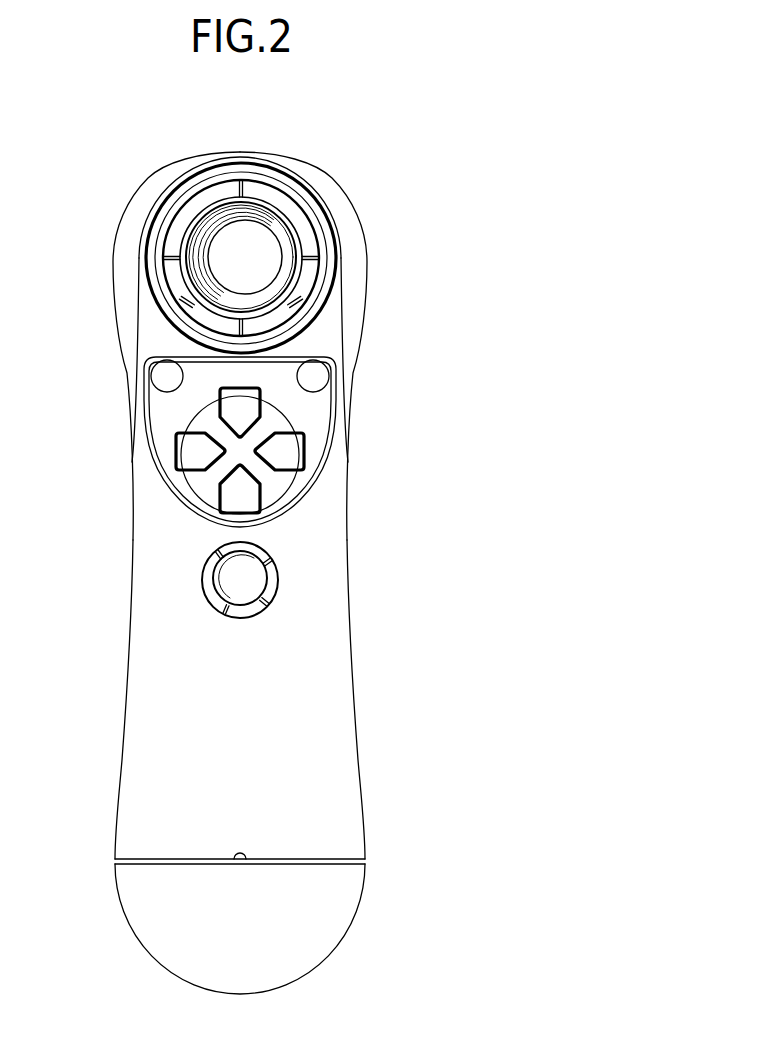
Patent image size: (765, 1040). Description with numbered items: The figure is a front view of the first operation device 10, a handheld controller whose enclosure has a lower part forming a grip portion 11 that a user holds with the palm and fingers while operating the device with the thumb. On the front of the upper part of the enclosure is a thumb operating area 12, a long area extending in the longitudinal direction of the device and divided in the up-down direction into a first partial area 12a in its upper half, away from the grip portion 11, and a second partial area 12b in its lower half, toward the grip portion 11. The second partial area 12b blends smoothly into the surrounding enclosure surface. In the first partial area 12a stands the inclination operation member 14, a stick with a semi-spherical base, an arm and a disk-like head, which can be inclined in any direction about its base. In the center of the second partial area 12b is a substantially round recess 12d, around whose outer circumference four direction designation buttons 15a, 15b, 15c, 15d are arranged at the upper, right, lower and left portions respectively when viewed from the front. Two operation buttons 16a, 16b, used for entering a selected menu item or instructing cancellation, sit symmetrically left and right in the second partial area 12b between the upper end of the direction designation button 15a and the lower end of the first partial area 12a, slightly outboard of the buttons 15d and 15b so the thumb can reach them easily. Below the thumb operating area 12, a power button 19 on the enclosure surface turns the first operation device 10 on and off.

The first operation device 10 is at (254, 549).
The grip portion 11 is at (238, 697).
The thumb operating area 12 is at (346, 338).
The first partial area 12a is at (315, 272).
The second partial area 12b is at (247, 442).
The recess 12d is at (192, 492).
The inclination operation member 14 is at (286, 206).
The direction designation button 15a is at (233, 408).
The direction designation button 15b is at (293, 450).
The direction designation button 15c is at (245, 490).
The direction designation button 15d is at (190, 447).
The operation button 16a is at (167, 377).
The operation button 16b is at (313, 376).
The power button 19 is at (230, 578).